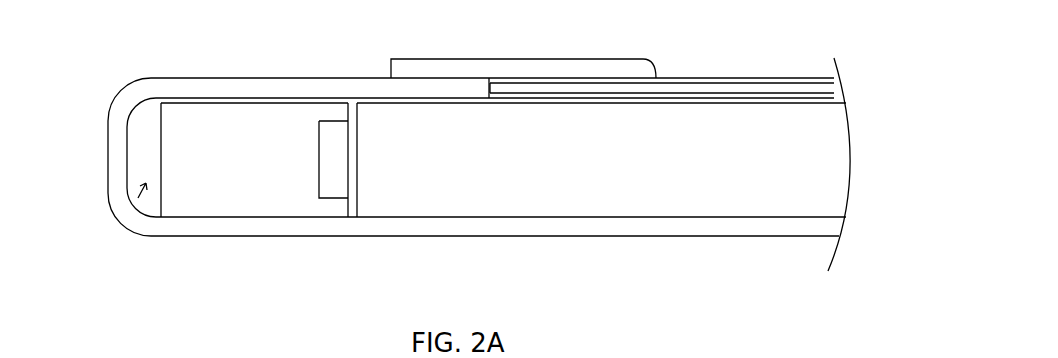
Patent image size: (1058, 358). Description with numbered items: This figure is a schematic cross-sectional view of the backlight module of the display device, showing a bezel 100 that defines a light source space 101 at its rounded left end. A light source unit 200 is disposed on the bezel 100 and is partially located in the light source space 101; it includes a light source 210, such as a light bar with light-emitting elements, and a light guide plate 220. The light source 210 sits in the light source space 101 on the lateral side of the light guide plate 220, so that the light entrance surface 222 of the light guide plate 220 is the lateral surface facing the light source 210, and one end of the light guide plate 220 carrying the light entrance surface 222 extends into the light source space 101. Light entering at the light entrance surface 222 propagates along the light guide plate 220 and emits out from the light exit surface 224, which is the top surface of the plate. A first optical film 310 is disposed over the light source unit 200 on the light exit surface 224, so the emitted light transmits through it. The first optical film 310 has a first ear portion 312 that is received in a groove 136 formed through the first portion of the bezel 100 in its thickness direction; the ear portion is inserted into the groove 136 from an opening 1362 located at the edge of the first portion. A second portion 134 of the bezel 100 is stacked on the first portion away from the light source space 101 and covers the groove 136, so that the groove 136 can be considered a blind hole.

The bezel 100 is at (163, 82).
The light source space 101 is at (135, 200).
The second portion 134 is at (588, 62).
The groove 136 is at (492, 80).
The opening 1362 is at (656, 78).
The light source unit 200 is at (304, 173).
The light source 210 is at (272, 195).
The light guide plate 220 is at (422, 242).
The light entrance surface 222 is at (350, 102).
The light exit surface 224 is at (822, 101).
The first optical film 310 is at (783, 82).
The first ear portion 312 is at (508, 88).